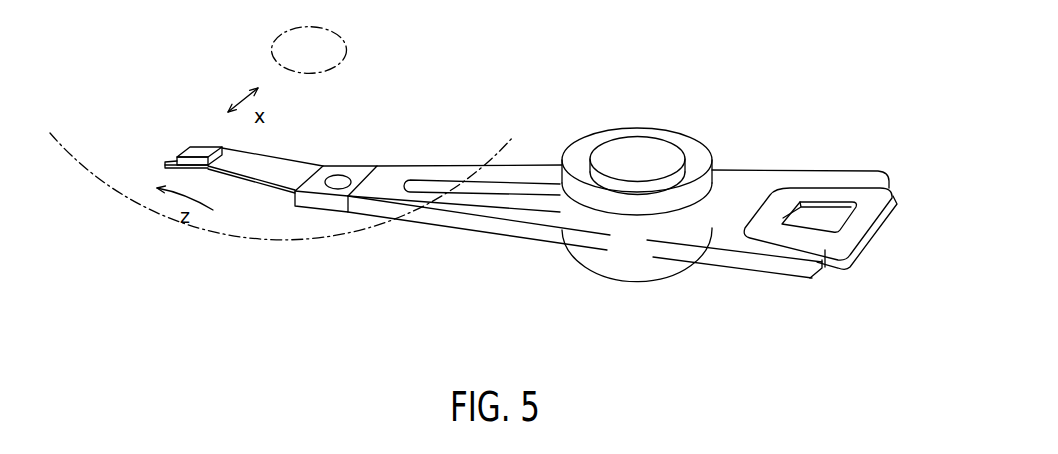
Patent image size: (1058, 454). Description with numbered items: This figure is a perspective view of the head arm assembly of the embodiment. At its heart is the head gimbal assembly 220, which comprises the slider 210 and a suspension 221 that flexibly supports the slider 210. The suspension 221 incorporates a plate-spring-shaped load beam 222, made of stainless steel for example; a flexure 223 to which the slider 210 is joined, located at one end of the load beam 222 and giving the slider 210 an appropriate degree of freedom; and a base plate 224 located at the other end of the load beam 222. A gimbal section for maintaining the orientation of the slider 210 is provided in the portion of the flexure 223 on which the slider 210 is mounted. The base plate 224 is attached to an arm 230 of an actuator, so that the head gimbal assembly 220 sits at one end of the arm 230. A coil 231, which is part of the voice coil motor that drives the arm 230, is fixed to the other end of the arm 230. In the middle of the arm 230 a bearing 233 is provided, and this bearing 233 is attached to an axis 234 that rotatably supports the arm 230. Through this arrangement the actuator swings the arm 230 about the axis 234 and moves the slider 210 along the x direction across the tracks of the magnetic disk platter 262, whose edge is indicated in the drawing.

The slider 210 is at (198, 152).
The head gimbal assembly 220 is at (245, 185).
The suspension 221 is at (284, 159).
The load beam 222 is at (302, 170).
The flexure 223 is at (170, 160).
The base plate 224 is at (365, 167).
The arm 230 is at (443, 222).
The coil 231 is at (876, 238).
The bearing 233 is at (583, 145).
The axis 234 is at (648, 150).
The magnetic disk platter 262 is at (207, 236).